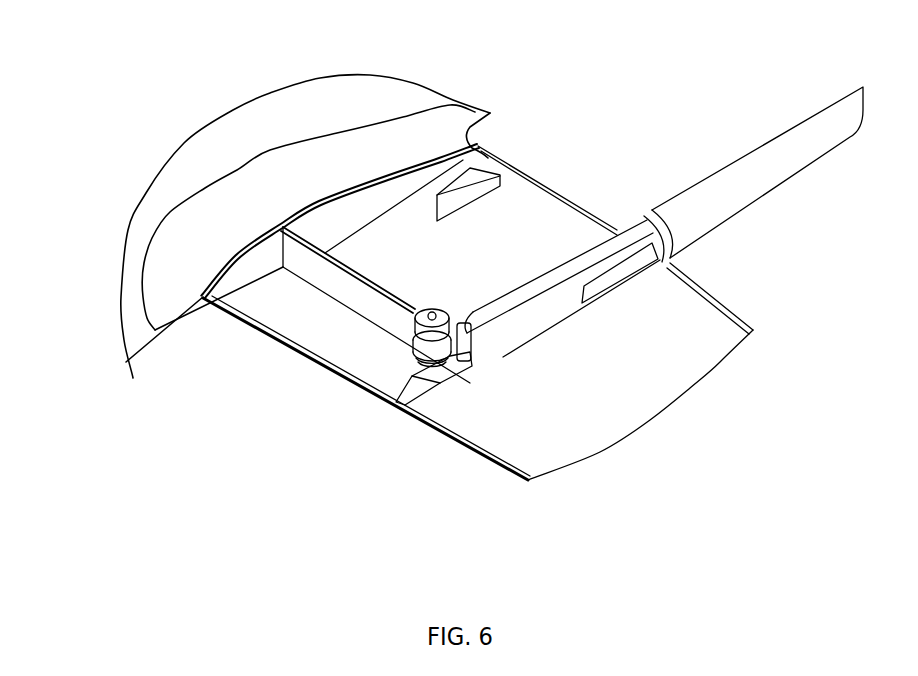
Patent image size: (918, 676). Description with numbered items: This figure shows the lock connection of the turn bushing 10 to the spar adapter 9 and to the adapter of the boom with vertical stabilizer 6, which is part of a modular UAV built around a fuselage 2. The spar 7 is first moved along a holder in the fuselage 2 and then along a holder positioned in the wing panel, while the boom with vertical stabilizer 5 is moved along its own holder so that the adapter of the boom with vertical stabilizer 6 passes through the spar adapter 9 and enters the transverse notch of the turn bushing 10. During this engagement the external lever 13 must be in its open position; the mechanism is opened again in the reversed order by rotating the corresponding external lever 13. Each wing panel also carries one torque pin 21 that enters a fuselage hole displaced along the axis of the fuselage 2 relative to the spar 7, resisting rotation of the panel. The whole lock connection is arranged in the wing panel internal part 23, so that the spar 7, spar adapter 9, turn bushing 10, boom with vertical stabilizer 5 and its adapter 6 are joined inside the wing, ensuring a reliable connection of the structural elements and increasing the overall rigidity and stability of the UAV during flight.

The fuselage 2 is at (195, 223).
The boom with vertical stabilizer 5 is at (685, 193).
The adapter of the boom with vertical stabilizer 6 is at (453, 350).
The spar 7 is at (360, 293).
The spar adapter 9 is at (465, 332).
The turn bushing 10 is at (353, 386).
The external lever 13 is at (398, 405).
The torque pin 21 is at (463, 177).
The wing panel internal part 23 is at (587, 397).